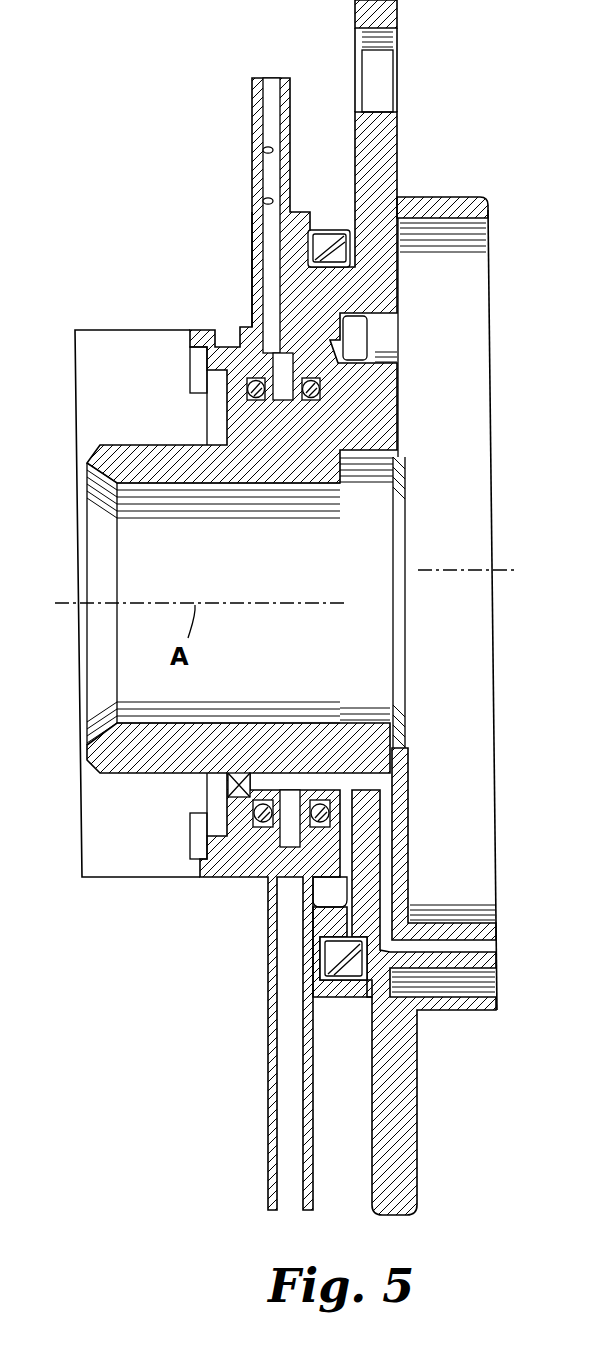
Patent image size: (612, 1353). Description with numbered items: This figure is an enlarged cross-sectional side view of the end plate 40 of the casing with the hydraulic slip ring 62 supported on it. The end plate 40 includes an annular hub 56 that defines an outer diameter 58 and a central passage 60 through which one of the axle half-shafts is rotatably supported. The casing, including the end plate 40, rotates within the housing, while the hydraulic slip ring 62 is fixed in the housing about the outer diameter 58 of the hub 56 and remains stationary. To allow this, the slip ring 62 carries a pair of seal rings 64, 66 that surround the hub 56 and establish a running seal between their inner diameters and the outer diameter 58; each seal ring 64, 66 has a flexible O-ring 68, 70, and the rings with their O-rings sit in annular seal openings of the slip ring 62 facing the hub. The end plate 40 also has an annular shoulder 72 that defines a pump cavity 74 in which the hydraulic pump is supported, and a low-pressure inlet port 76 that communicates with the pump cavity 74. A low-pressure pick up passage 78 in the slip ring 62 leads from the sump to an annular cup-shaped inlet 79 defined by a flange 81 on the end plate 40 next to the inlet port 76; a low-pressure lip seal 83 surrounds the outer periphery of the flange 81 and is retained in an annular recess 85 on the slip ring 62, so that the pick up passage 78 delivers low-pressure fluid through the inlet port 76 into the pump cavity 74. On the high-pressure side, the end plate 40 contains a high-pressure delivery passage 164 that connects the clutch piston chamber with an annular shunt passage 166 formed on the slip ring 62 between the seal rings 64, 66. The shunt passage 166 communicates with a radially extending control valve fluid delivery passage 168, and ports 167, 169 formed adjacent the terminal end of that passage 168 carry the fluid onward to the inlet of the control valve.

The end plate 40 is at (380, 148).
The annular hub 56 is at (212, 467).
The outer diameter 58 is at (283, 362).
The central passage 60 is at (128, 553).
The hydraulic slip ring 62 is at (252, 270).
The seal ring 64 is at (256, 400).
The seal ring 66 is at (312, 400).
The O-ring 68 is at (254, 378).
The O-ring 70 is at (340, 358).
The annular shoulder 72 is at (456, 197).
The pump cavity 74 is at (425, 222).
The low-pressure inlet port 76 is at (380, 370).
The low-pressure pick up passage 78 is at (282, 1050).
The annular cup-shaped inlet 79 is at (322, 892).
The flange 81 is at (302, 930).
The low-pressure lip seal 83 is at (368, 992).
The annular recess 85 is at (330, 230).
The high-pressure delivery passage 164 is at (394, 882).
The annular shunt passage 166 is at (290, 800).
The port 167 is at (263, 200).
The control valve fluid delivery passage 168 is at (252, 232).
The port 169 is at (274, 150).